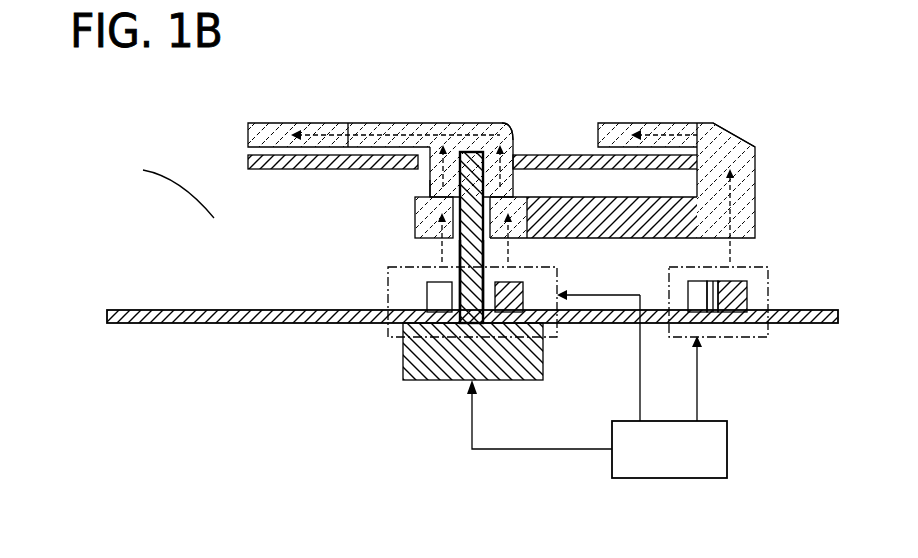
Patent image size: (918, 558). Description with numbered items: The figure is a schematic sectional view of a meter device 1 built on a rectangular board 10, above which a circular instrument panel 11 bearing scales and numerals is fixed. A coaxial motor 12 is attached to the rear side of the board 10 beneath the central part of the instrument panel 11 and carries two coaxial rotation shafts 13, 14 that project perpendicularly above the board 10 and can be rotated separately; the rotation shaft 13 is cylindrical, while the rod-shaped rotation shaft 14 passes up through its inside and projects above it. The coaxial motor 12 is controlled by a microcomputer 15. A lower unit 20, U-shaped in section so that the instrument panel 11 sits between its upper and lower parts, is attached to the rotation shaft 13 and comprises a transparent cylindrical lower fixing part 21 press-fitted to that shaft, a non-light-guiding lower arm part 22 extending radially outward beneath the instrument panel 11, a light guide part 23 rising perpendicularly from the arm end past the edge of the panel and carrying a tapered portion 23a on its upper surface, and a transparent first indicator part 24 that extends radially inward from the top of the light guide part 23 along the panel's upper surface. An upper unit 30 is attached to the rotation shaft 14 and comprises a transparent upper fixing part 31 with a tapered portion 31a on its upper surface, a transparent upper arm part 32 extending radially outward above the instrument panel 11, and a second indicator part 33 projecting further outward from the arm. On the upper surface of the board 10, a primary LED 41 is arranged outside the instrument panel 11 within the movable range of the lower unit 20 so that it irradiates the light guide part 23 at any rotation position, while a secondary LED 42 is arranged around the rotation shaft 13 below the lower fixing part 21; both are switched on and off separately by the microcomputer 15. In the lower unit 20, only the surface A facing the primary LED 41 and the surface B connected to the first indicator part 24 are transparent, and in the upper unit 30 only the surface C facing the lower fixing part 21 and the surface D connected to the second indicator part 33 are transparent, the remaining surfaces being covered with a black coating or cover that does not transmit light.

The meter device 1 is at (170, 188).
The board 10 is at (225, 310).
The instrument panel 11 is at (262, 171).
The coaxial motor 12 is at (412, 381).
The rotation shaft 13 is at (457, 262).
The rotation shaft 14 is at (432, 186).
The microcomputer 15 is at (727, 450).
The lower unit 20 is at (763, 152).
The lower fixing part 21 is at (415, 228).
The lower arm part 22 is at (600, 238).
The light guide part 23 is at (757, 195).
The tapered portion 23a is at (735, 132).
The first indicator part 24 is at (670, 123).
The upper unit 30 is at (375, 118).
The upper fixing part 31 is at (513, 148).
The tapered portion 31a is at (507, 123).
The upper arm part 32 is at (422, 123).
The second indicator part 33 is at (262, 123).
The primary LED 41 is at (745, 282).
The secondary LED 42 is at (427, 295).
The opposed surface A is at (757, 238).
The connected surface B is at (697, 123).
The opposed surface C is at (515, 172).
The connected surface D is at (348, 123).